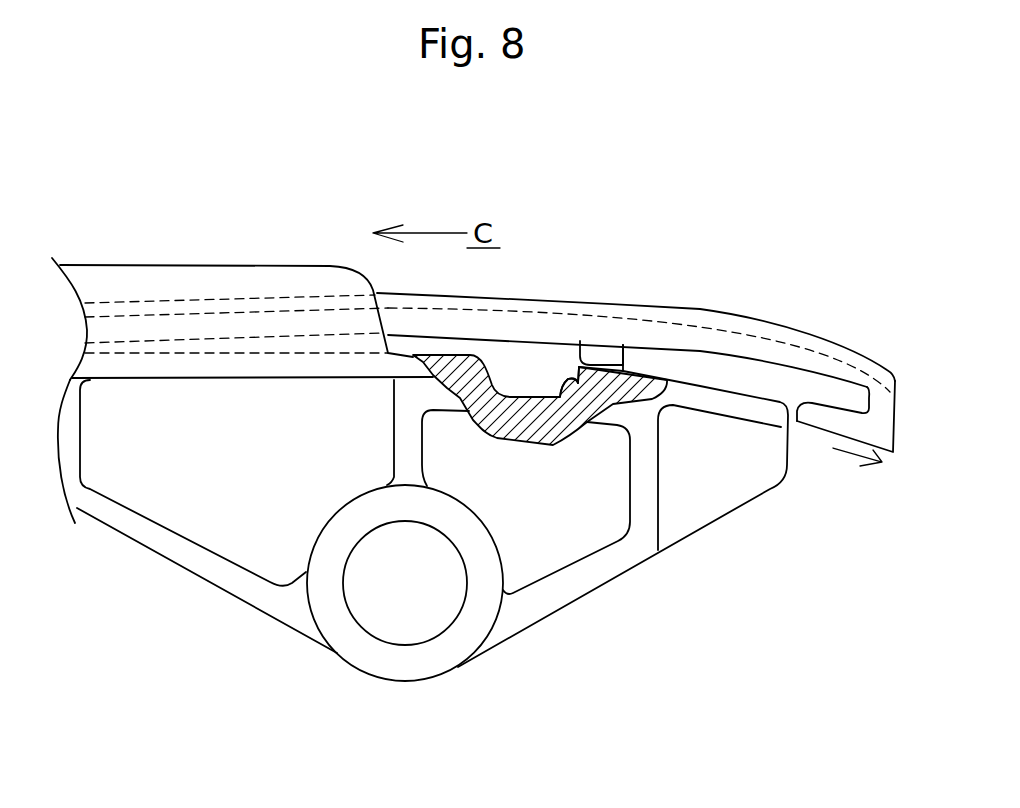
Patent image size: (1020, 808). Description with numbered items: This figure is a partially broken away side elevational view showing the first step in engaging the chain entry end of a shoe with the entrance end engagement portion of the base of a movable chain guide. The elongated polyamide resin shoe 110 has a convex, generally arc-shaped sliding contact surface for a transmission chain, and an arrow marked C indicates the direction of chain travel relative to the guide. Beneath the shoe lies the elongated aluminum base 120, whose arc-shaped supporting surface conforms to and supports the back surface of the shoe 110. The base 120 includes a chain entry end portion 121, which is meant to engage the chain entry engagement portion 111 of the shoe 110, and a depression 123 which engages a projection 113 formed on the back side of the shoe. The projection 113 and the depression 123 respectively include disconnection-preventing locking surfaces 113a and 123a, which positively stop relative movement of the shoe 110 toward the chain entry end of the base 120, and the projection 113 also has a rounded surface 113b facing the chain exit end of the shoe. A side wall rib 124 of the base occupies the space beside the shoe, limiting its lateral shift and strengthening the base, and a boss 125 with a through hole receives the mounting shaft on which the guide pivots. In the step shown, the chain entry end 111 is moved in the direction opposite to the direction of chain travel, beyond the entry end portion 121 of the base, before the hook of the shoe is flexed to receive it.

The shoe 110 is at (828, 222).
The chain entry engagement portion 111 is at (822, 417).
The projection 113 is at (603, 350).
The disconnection-preventing locking surface 113a is at (627, 355).
The rounded surface 113b is at (578, 360).
The base 120 is at (797, 553).
The chain entry end portion 121 is at (735, 405).
The depression 123 is at (527, 400).
The disconnection-preventing locking surface 123a is at (563, 398).
The side wall rib 124 is at (182, 277).
The boss 125 is at (428, 630).